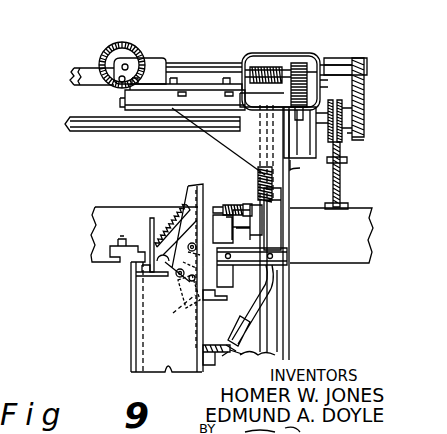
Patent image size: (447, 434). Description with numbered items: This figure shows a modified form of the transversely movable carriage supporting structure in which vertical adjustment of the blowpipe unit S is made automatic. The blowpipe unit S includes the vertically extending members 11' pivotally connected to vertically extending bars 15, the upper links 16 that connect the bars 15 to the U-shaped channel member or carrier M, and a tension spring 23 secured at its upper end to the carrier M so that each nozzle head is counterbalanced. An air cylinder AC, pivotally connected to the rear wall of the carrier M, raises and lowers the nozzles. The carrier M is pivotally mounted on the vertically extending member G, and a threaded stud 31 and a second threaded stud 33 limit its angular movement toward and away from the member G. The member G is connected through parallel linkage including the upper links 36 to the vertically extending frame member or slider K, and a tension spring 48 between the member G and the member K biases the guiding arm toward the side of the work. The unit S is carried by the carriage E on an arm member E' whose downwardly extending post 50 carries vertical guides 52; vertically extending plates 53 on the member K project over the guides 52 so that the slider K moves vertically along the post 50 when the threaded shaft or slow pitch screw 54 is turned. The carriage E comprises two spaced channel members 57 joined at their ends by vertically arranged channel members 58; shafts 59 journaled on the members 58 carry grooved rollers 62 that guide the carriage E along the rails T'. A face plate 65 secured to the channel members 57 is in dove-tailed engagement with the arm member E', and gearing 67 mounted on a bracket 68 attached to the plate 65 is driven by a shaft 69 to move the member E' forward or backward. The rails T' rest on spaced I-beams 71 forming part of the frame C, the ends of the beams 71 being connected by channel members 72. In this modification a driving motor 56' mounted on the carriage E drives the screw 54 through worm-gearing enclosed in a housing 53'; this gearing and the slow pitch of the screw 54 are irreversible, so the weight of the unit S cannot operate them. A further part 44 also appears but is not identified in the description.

The gearing 67 is at (102, 36).
The bracket 68 is at (154, 58).
The channel members 57 is at (210, 82).
The housing 53' is at (281, 72).
The shaft 69 is at (340, 58).
The carriage E is at (77, 68).
The shafts 59 is at (93, 131).
The face plate 65 is at (161, 100).
The driving motor 56' is at (274, 146).
The rollers 62 is at (343, 111).
The vertically arranged channel members 58 is at (365, 136).
The rails T' is at (355, 175).
The post 50 is at (295, 170).
The I-beams 71 is at (343, 192).
The vertical guides 52 is at (258, 218).
The channel members 72 is at (358, 248).
The upper links 36 is at (277, 255).
The rod 44 is at (283, 290).
The arm member E' is at (305, 233).
The vertically extending plates 53 is at (296, 276).
The vertically extending frame member K is at (252, 347).
The vertically extending member G is at (230, 348).
The threaded stud 31 is at (210, 348).
The air cylinder AC is at (173, 307).
The second threaded stud 33 is at (210, 298).
The vertically extending members 15 is at (132, 297).
The vertically extending members 11' is at (112, 229).
The frame C is at (130, 197).
The upper links 16 is at (162, 247).
The blowpipe unit S is at (170, 191).
The tension spring 23 is at (184, 200).
The threaded shaft 54 is at (262, 182).
The tension spring 48 is at (247, 204).
The channel member M is at (170, 372).